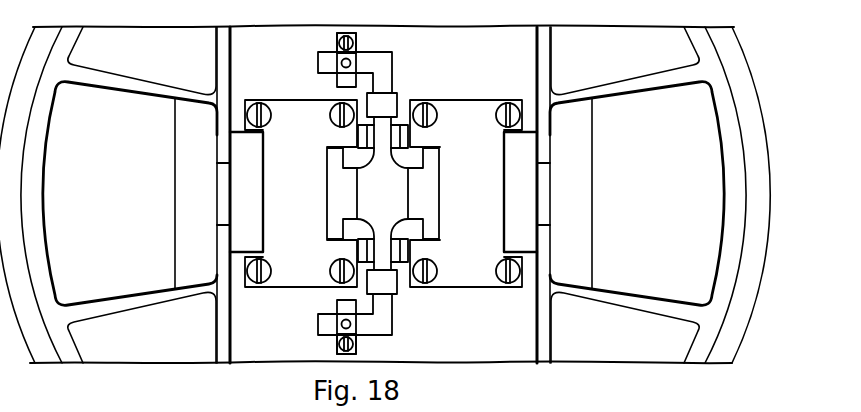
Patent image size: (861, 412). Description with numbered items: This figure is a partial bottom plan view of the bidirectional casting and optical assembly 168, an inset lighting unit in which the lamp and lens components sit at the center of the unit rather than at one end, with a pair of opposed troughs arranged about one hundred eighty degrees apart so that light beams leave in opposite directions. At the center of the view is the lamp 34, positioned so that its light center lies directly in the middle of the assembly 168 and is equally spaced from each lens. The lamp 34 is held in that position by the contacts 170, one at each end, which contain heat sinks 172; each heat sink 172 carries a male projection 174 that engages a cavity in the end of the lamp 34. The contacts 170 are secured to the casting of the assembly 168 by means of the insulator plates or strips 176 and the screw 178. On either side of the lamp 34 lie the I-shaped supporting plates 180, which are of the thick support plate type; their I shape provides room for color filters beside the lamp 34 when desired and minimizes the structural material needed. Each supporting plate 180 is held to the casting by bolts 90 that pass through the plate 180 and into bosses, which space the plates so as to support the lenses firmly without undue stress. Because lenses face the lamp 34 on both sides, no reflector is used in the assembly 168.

The lamp 34 is at (405, 206).
The bolts 90 is at (330, 116).
The bidirectional casting and optical assembly 168 is at (452, 352).
The contacts 170 is at (393, 66).
The heat sinks 172 is at (394, 100).
The male projections 174 is at (362, 125).
The insulator plates or strips 176 is at (353, 43).
The screw 178 is at (342, 67).
The I-shaped supporting plates 180 is at (299, 284).